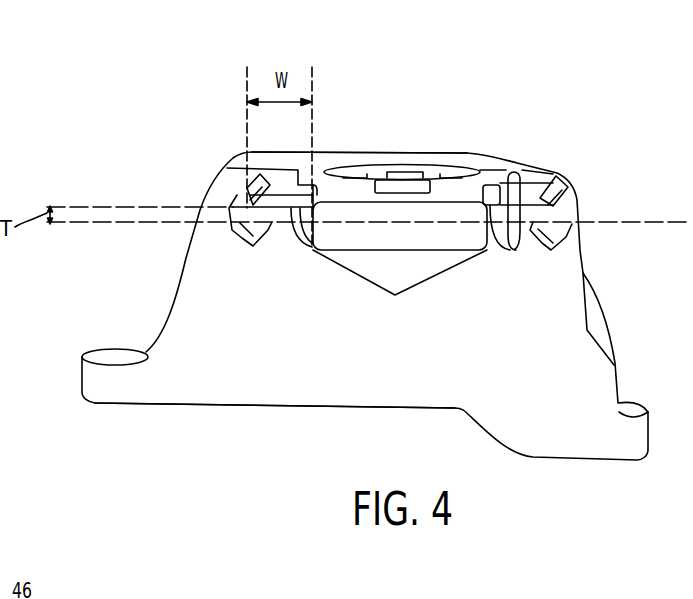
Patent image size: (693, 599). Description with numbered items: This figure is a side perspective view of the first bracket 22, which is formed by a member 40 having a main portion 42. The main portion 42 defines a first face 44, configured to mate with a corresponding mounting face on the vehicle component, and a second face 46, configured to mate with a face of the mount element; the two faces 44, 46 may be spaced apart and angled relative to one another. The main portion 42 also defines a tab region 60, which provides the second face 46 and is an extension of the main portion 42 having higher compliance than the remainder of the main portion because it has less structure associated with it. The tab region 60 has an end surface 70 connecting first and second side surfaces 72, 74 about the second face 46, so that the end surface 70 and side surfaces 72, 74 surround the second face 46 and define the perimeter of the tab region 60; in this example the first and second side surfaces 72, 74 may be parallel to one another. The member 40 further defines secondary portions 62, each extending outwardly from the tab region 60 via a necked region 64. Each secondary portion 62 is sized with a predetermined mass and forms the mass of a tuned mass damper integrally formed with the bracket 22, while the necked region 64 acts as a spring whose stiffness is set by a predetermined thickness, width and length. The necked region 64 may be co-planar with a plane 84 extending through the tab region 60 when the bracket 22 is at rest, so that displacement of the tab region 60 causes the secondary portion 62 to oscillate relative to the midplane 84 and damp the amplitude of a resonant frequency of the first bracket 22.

The first bracket 22 is at (614, 139).
The member 40 is at (365, 316).
The main portion 42 is at (367, 380).
The first face 44 is at (218, 405).
The second face 46 is at (409, 147).
The tab region 60 is at (444, 192).
The secondary portion 62 is at (248, 240).
The necked region 64 is at (529, 223).
The end surface 70 is at (413, 245).
The first side surface 72 is at (490, 250).
The second side surface 74 is at (313, 249).
The plane 84 is at (658, 226).